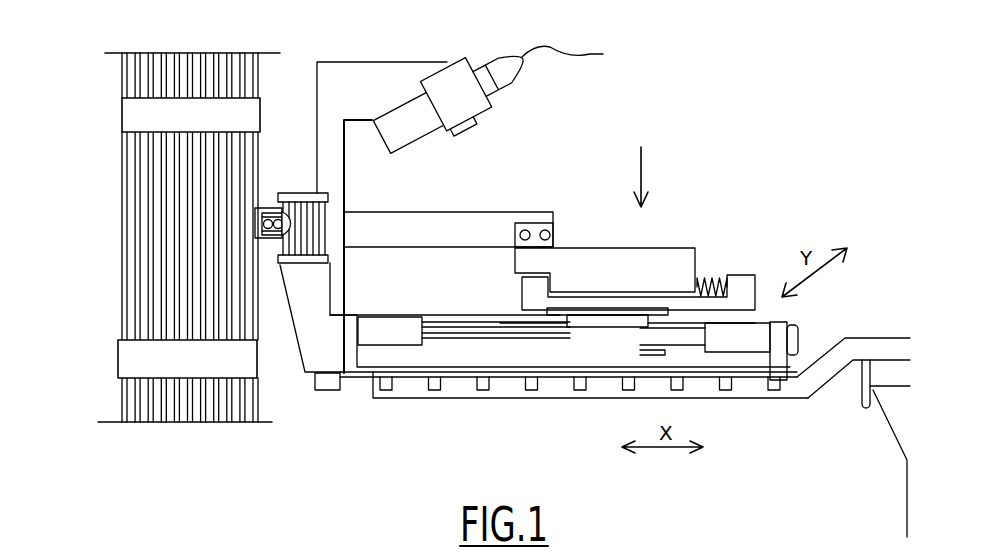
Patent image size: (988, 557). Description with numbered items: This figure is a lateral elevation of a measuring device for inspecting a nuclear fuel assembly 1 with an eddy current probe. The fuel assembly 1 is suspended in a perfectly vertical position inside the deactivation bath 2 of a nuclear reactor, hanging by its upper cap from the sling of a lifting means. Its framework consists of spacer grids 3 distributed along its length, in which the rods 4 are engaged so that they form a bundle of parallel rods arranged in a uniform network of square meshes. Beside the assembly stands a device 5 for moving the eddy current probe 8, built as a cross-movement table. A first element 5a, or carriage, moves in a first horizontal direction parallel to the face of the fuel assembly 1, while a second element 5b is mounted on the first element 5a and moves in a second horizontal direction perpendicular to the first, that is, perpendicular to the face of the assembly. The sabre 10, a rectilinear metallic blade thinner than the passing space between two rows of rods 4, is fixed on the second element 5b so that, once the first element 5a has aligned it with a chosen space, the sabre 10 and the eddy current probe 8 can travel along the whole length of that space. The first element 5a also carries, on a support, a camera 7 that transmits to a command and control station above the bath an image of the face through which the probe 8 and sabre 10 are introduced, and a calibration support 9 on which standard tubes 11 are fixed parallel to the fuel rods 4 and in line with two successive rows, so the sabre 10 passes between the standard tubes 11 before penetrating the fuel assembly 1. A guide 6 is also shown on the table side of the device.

The fuel assembly 1 is at (106, 178).
The deactivation bath 2 is at (369, 175).
The spacer grids 3 is at (122, 112).
The rods 4 is at (143, 298).
The device for moving an eddy current measurement probe 5 is at (580, 147).
The first element 5a is at (465, 366).
The second element 5b is at (635, 292).
The guide rail 6 is at (890, 336).
The camera 7 is at (440, 82).
The eddy current probe 8 is at (268, 207).
The calibration support 9 is at (307, 362).
The sabre 10 is at (464, 212).
The standard tubes 11 is at (285, 265).